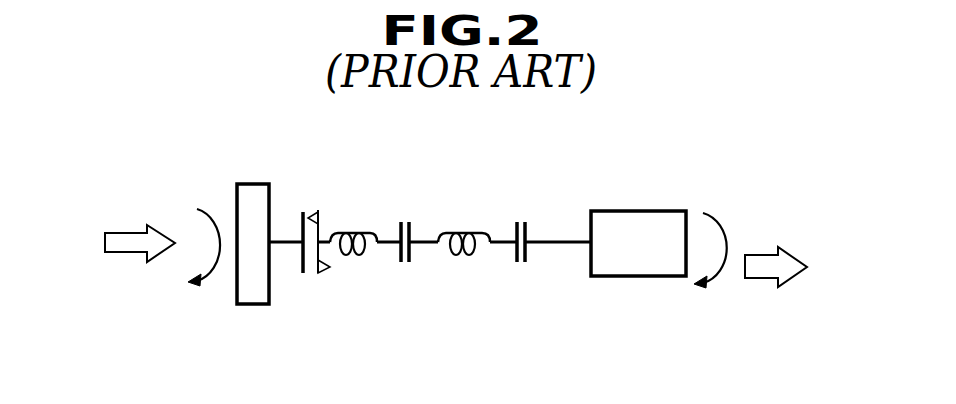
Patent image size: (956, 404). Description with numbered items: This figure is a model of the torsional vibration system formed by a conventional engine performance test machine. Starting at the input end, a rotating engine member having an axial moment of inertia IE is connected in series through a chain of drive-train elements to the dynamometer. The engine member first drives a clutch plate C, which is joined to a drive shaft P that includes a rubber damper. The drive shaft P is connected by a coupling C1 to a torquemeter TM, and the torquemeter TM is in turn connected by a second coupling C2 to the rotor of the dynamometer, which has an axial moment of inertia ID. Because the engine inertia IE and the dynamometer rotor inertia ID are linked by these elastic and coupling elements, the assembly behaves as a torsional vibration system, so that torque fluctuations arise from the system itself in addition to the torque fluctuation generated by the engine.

The axial moment of inertia of the rotating engine member IE is at (253, 227).
The clutch plate C is at (314, 225).
The drive shaft P is at (353, 227).
The coupling C1 is at (408, 258).
The torquemeter TM is at (467, 228).
The coupling C2 is at (523, 259).
The axial moment of inertia of the dynamometer rotor ID is at (638, 227).